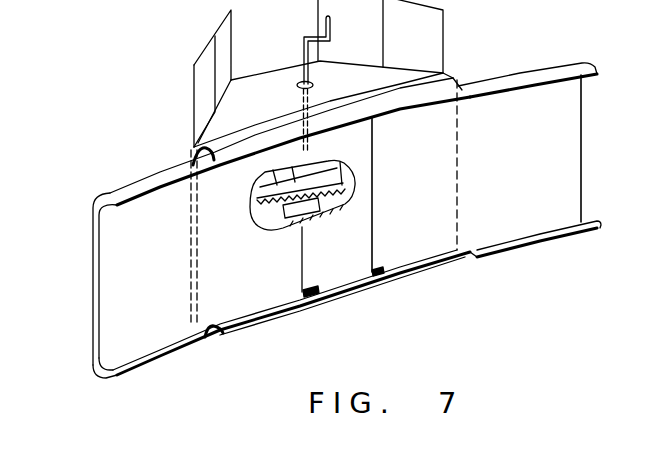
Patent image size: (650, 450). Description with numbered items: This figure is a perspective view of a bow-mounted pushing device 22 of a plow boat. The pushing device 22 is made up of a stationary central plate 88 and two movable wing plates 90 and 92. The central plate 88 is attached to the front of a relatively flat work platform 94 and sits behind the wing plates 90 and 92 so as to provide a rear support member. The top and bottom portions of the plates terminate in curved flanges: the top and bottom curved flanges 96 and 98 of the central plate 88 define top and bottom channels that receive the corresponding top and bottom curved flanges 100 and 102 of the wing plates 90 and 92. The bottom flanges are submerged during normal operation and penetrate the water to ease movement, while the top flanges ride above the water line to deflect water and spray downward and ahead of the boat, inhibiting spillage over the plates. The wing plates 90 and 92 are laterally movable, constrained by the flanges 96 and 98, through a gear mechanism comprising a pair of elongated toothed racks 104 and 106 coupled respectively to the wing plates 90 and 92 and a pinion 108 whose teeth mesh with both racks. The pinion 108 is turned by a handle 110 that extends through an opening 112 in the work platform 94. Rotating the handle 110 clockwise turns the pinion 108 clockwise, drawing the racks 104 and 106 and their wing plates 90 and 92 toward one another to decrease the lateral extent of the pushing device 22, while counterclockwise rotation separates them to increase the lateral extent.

The pushing device 22 is at (538, 62).
The central plate 88 is at (343, 273).
The wing plate 90 is at (115, 278).
The wing plate 92 is at (565, 185).
The work platform 94 is at (256, 85).
The top curved flange 96 is at (195, 170).
The bottom curved flange 98 is at (205, 323).
The top curved flange 100 is at (138, 184).
The bottom curved flange 102 is at (143, 362).
The toothed rack 104 is at (253, 223).
The toothed rack 106 is at (353, 191).
The pinion 108 is at (316, 220).
The handle 110 is at (331, 30).
The opening 112 is at (311, 84).